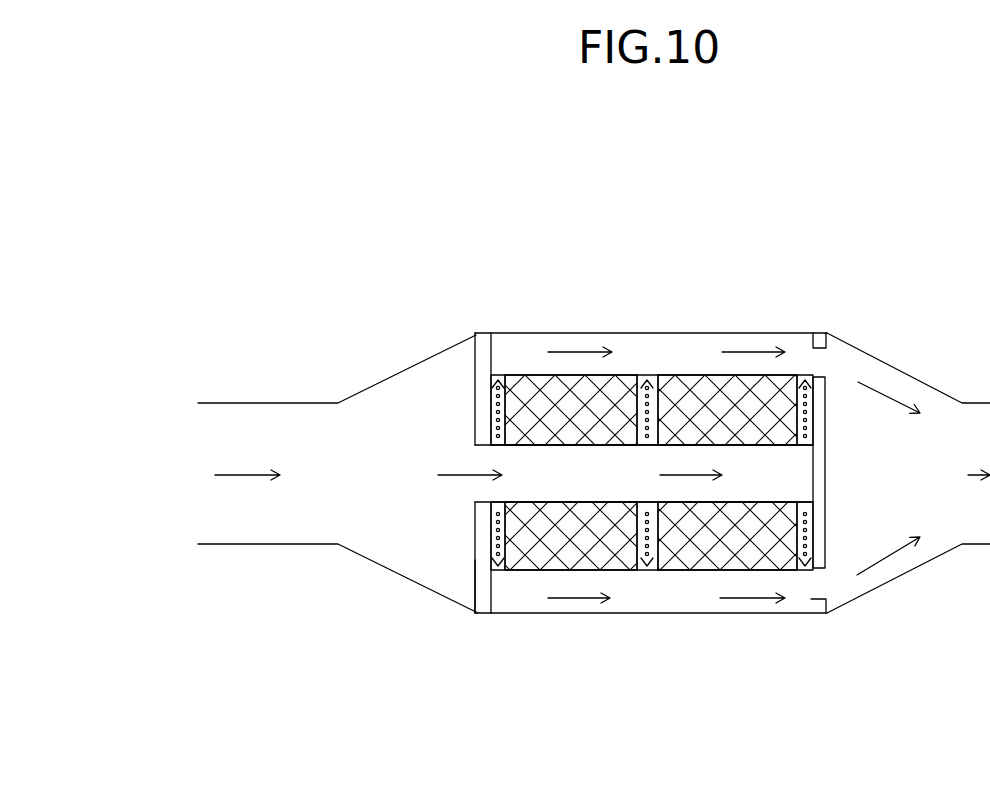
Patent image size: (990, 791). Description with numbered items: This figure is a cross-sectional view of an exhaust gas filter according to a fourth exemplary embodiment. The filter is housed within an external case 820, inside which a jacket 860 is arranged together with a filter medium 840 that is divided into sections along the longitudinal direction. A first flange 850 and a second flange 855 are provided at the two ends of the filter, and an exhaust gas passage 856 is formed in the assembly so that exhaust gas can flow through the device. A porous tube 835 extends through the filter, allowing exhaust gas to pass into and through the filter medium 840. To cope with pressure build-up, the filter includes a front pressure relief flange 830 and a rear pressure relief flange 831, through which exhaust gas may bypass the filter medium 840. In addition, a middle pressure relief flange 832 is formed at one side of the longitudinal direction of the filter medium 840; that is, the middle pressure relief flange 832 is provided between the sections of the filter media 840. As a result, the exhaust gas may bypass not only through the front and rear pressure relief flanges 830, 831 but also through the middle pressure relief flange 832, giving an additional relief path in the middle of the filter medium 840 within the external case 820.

The external case 820 is at (637, 332).
The jacket 860 is at (692, 377).
The exhaust gas passage 856 is at (820, 363).
The second flange 855 is at (822, 562).
The first flange 850 is at (478, 588).
The front pressure relief flange 830 is at (497, 566).
The filter medium 840 is at (550, 560).
The middle pressure relief flange 832 is at (653, 565).
The porous tube 835 is at (683, 492).
The rear pressure relief flange 831 is at (802, 565).